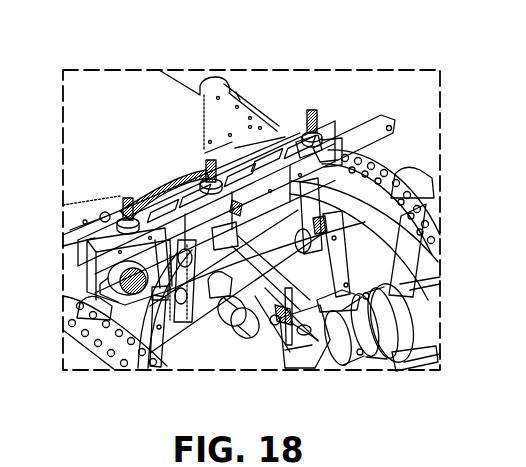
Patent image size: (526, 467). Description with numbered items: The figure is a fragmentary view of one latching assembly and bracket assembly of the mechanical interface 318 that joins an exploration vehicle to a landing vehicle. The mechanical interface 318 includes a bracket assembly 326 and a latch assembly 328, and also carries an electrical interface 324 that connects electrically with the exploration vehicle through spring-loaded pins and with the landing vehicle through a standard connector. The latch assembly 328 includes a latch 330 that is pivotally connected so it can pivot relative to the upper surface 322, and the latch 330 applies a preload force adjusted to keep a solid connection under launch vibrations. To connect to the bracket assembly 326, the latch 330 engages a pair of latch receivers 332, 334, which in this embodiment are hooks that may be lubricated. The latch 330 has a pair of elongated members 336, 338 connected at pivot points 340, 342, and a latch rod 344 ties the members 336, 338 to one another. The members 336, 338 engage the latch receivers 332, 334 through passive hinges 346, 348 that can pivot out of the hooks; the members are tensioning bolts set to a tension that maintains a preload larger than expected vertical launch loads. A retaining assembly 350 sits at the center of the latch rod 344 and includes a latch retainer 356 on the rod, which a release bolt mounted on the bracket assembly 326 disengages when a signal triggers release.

The mechanical interface 318 is at (280, 138).
The upper surface 322 is at (78, 226).
The electrical interface 324 is at (92, 254).
The bracket assembly 326 is at (162, 189).
The latch assembly 328 is at (291, 190).
The latch 330 is at (345, 172).
The latch receiver 332 is at (172, 362).
The latch receiver 334 is at (328, 217).
The elongated member 336 is at (220, 340).
The elongated member 338 is at (322, 230).
The pivot point 340 is at (230, 254).
The pivot point 342 is at (372, 208).
The latch rod 344 is at (362, 335).
The passive hinge 346 is at (128, 362).
The passive hinge 348 is at (400, 188).
The retaining assembly 350 is at (250, 322).
The latch retainer 356 is at (312, 340).